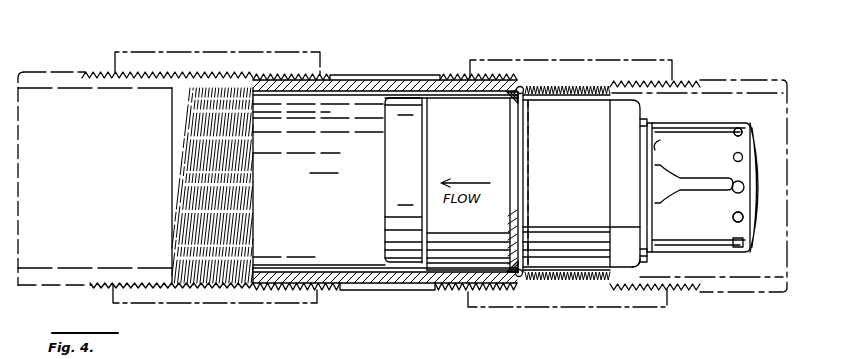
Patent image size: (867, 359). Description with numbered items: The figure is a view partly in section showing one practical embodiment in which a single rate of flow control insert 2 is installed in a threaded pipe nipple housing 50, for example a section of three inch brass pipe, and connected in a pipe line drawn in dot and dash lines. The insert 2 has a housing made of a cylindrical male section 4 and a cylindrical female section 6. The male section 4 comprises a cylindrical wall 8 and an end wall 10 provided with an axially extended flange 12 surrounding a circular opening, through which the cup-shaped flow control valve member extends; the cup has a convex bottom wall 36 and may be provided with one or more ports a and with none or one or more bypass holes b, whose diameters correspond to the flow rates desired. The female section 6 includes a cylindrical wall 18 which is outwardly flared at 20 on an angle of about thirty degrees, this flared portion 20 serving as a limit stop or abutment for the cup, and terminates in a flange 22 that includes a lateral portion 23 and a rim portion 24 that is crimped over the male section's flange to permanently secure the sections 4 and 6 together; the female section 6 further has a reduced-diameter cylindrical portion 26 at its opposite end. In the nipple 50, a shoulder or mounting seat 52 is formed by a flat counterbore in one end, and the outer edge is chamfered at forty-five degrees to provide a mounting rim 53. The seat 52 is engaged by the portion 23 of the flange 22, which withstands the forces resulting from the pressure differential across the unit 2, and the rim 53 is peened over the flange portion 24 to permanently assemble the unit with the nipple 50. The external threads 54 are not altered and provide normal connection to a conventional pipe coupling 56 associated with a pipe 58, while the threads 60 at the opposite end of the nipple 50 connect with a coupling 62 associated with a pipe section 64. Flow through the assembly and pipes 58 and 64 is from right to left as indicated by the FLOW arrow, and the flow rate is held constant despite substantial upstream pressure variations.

The rate of flow control insert 2 is at (375, 235).
The cylindrical male section 4 is at (714, 125).
The cylindrical female section 6 is at (404, 165).
The cylindrical wall 8 is at (600, 207).
The end wall 10 is at (640, 267).
The axially extended flange 12 is at (650, 122).
The cylindrical wall 18 is at (479, 231).
The outwardly flared portion 20 is at (508, 173).
The flange 22 is at (521, 85).
The lateral portion 23 is at (517, 278).
The rim portion 24 is at (526, 163).
The reduced-diameter cylindrical portion 26 is at (400, 207).
The convex bottom wall 36 is at (767, 160).
The threaded pipe nipple housing 50 is at (401, 298).
The mounting seat 52 is at (516, 94).
The mounting rim 53 is at (527, 94).
The external threads 54 is at (452, 292).
The pipe coupling 56 is at (560, 57).
The pipe 58 is at (730, 82).
The threads 60 is at (322, 73).
The coupling 62 is at (213, 58).
The pipe section 64 is at (67, 82).
The ports a is at (653, 143).
The bypass holes b is at (736, 134).